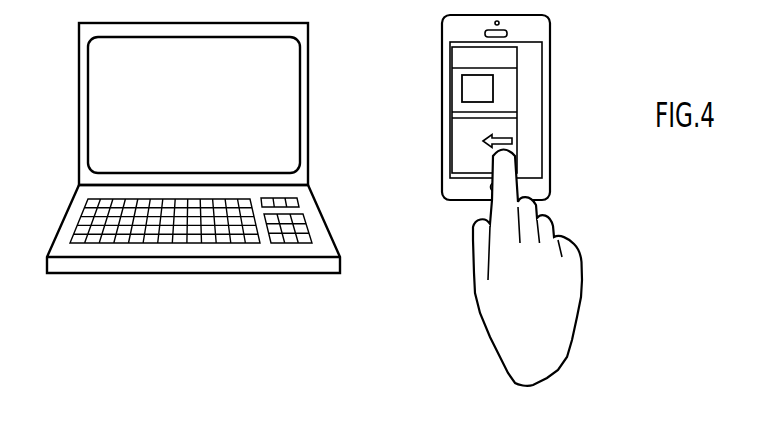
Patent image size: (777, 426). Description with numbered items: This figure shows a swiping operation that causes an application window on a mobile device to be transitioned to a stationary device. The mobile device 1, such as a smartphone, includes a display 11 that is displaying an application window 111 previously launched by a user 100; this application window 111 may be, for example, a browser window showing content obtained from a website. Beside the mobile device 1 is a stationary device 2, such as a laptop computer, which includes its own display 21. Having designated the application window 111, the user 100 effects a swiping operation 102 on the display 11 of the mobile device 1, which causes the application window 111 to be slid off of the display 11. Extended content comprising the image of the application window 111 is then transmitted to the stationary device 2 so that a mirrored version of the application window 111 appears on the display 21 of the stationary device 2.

The mobile device 1 is at (518, 107).
The display 11 is at (522, 118).
The application window 111 is at (507, 95).
The swiping operation 102 is at (512, 140).
The user 100 is at (562, 312).
The stationary device 2 is at (178, 148).
The display 21 is at (100, 100).